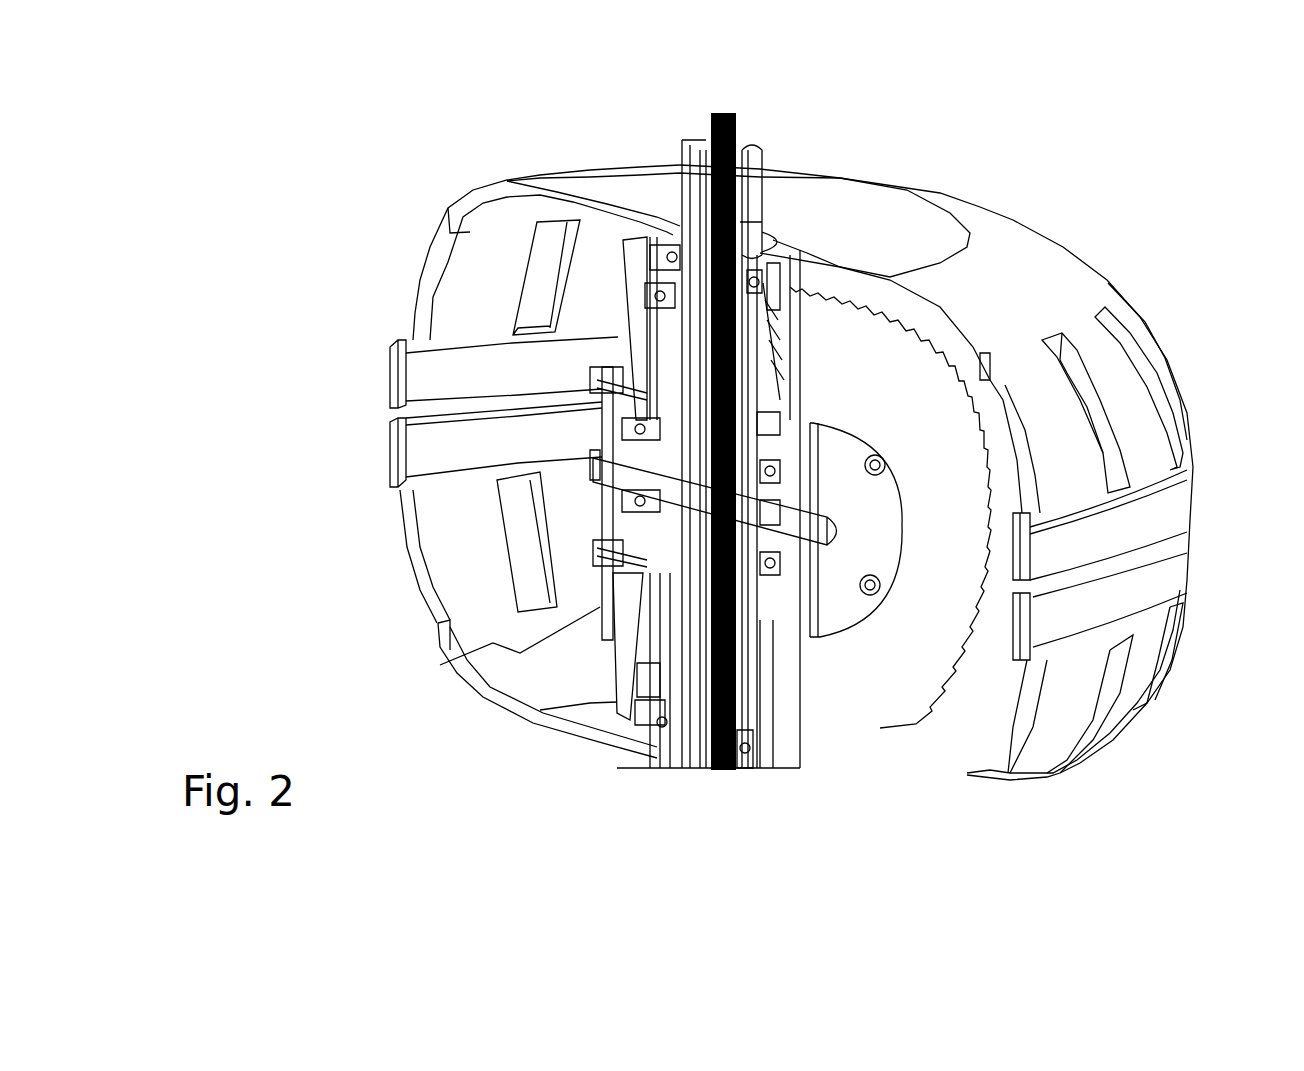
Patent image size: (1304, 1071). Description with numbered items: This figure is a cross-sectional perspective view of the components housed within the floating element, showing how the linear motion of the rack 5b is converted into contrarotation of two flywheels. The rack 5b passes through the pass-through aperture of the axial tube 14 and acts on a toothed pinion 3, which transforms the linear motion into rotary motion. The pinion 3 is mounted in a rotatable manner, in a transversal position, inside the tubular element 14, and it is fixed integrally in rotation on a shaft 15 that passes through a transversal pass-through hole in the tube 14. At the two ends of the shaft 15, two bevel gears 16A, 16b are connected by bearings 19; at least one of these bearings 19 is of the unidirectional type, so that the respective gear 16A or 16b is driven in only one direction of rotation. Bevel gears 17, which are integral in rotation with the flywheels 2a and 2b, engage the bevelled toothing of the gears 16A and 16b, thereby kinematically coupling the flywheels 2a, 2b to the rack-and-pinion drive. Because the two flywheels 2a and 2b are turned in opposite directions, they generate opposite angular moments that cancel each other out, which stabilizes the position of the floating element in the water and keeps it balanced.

The flywheel 2a is at (1003, 273).
The flywheel 2b is at (460, 573).
The toothed pinion 3 is at (643, 572).
The rack 5b is at (713, 128).
The axial tube 14 is at (753, 180).
The shaft 15 is at (800, 530).
The bevel gear 16A is at (892, 383).
The bevel gear 16b is at (633, 330).
The bevel gears 17 is at (787, 277).
The bearings 19 is at (598, 447).